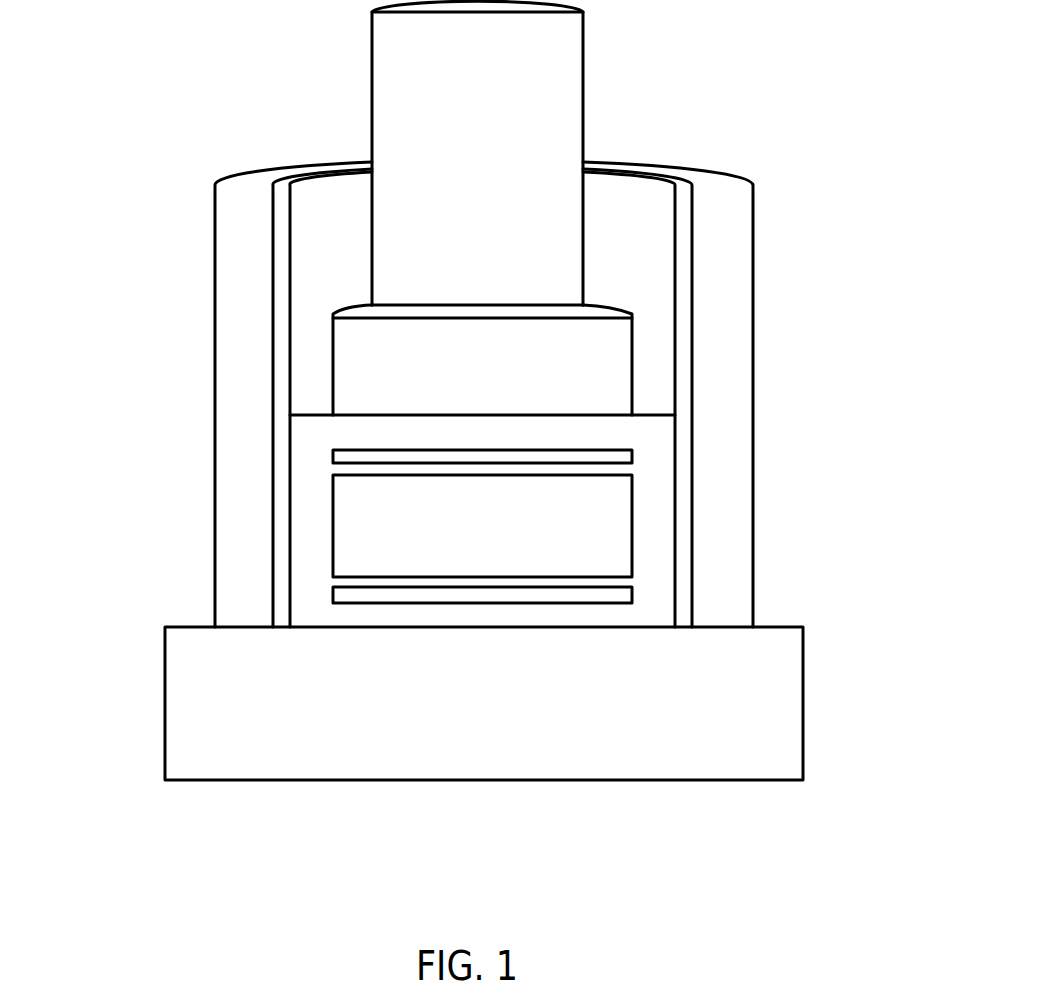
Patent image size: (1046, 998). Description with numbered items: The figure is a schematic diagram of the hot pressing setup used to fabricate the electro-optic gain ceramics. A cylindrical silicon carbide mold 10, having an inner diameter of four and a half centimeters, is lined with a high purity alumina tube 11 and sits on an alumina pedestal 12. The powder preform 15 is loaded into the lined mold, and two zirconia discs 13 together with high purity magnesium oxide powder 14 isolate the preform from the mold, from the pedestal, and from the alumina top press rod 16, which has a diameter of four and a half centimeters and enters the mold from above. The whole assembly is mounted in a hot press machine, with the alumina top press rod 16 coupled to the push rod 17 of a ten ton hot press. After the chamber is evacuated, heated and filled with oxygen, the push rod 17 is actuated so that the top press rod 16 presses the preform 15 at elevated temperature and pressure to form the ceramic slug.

The silicon carbide mold 10 is at (717, 390).
The alumina tube 11 is at (685, 303).
The alumina pedestal 12 is at (175, 704).
The zirconia discs 13 is at (343, 594).
The magnesium oxide powder 14 is at (657, 596).
The powder preform 15 is at (610, 523).
The alumina top press rod 16 is at (340, 354).
The push rod 17 is at (533, 65).